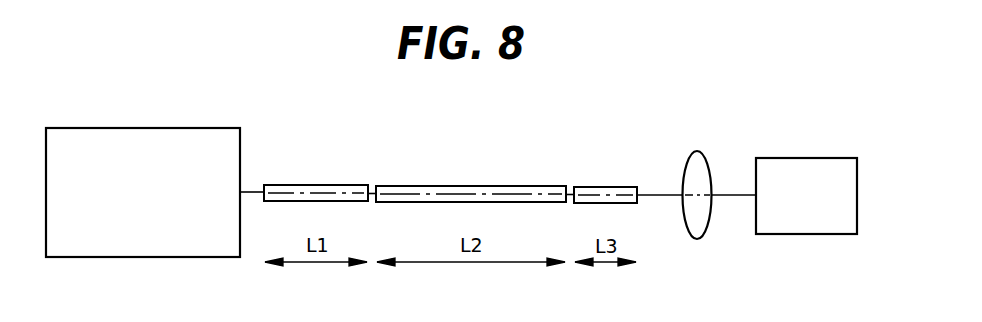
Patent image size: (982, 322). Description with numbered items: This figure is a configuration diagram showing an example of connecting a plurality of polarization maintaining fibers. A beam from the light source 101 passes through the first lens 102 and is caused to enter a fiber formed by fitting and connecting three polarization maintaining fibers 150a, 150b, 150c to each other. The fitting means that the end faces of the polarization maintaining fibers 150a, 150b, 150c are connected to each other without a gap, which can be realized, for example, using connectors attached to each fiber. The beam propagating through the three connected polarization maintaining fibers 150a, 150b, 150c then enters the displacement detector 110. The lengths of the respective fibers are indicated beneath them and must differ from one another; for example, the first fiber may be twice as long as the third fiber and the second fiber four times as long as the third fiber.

The displacement detector 110 is at (186, 128).
The polarization maintaining fiber 150a is at (311, 185).
The polarization maintaining fiber 150b is at (450, 186).
The polarization maintaining fiber 150c is at (600, 187).
The first lens 102 is at (696, 152).
The light source 101 is at (818, 158).